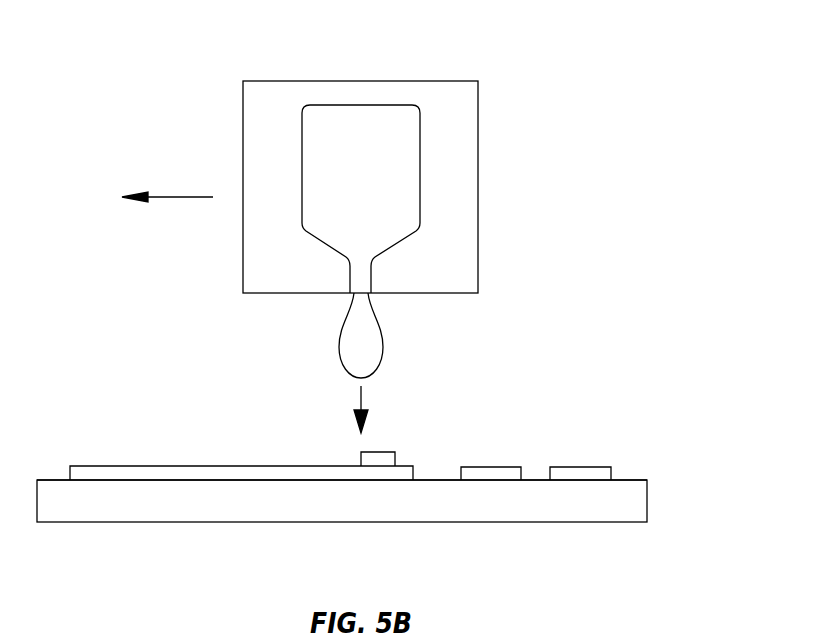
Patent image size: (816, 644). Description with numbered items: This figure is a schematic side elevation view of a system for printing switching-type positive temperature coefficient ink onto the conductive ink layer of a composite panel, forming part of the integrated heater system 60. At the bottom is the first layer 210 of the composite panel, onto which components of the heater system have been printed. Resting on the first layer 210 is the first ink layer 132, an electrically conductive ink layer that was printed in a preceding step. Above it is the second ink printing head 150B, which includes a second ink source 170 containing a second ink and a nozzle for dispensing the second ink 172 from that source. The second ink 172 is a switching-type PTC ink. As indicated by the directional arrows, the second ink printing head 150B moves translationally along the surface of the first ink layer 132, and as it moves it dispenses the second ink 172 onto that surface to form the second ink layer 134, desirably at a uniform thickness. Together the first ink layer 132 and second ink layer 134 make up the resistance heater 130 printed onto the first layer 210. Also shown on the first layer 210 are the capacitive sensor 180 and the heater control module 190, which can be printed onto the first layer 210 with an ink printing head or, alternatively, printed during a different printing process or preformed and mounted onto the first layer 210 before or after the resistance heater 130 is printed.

The second ink printing head 150B is at (497, 104).
The second ink source 170 is at (378, 194).
The second ink 172 is at (407, 347).
The resistance heater 130 is at (322, 435).
The first ink layer 132 is at (184, 476).
The second ink layer 134 is at (382, 458).
The capacitive sensor 180 is at (493, 475).
The heater control module 190 is at (592, 475).
The first layer 210 is at (580, 513).
The integrated heater system 60 is at (654, 462).